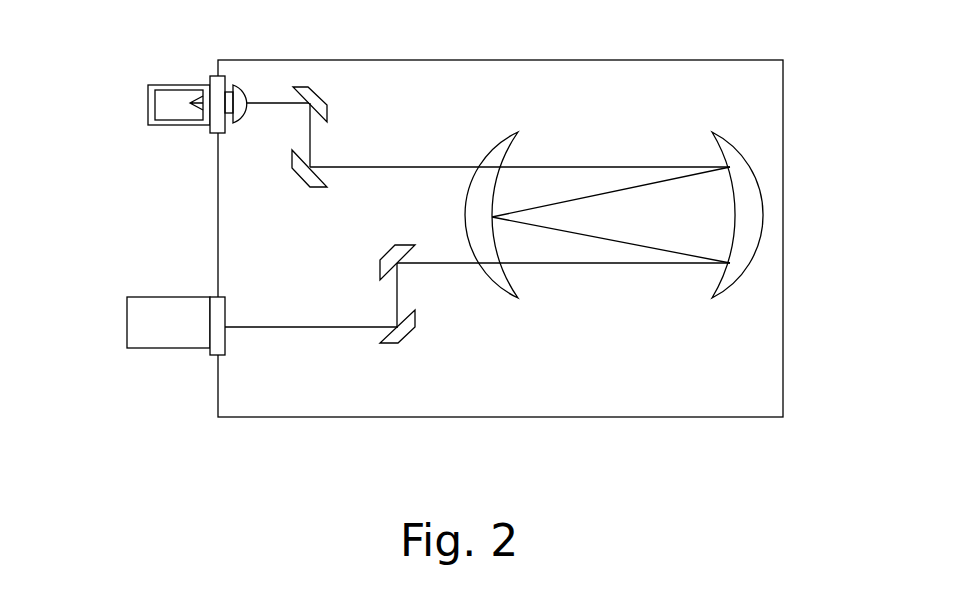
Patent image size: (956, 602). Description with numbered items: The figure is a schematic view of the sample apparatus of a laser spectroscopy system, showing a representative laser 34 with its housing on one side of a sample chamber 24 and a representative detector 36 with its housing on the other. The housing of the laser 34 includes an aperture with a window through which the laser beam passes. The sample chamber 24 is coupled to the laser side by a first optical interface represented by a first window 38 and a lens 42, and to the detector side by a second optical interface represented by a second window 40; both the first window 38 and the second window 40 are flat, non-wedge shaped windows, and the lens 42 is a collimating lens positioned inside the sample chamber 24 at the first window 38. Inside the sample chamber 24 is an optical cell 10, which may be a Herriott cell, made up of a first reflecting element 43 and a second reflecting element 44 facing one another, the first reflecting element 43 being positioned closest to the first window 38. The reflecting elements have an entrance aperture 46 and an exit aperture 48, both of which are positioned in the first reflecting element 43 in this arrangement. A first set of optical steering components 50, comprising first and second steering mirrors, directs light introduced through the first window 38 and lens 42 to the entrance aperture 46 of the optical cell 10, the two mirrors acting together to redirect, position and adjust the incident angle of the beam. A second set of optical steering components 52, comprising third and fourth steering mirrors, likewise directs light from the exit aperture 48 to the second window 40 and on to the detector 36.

The optical cell 10 is at (628, 156).
The sample chamber 24 is at (793, 85).
The laser 34 is at (146, 108).
The detector 36 is at (125, 323).
The first window 38 is at (207, 70).
The second window 40 is at (207, 355).
The lens 42 is at (246, 82).
The first reflecting element 43 is at (505, 303).
The second reflecting element 44 is at (727, 303).
The entrance aperture 46 is at (470, 160).
The exit aperture 48 is at (474, 268).
The first set of optical steering components 50 is at (320, 160).
The second set of optical steering components 52 is at (389, 320).